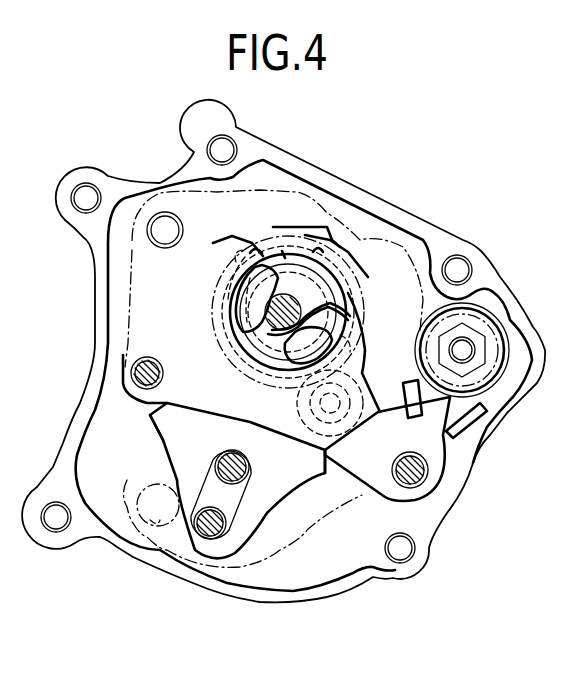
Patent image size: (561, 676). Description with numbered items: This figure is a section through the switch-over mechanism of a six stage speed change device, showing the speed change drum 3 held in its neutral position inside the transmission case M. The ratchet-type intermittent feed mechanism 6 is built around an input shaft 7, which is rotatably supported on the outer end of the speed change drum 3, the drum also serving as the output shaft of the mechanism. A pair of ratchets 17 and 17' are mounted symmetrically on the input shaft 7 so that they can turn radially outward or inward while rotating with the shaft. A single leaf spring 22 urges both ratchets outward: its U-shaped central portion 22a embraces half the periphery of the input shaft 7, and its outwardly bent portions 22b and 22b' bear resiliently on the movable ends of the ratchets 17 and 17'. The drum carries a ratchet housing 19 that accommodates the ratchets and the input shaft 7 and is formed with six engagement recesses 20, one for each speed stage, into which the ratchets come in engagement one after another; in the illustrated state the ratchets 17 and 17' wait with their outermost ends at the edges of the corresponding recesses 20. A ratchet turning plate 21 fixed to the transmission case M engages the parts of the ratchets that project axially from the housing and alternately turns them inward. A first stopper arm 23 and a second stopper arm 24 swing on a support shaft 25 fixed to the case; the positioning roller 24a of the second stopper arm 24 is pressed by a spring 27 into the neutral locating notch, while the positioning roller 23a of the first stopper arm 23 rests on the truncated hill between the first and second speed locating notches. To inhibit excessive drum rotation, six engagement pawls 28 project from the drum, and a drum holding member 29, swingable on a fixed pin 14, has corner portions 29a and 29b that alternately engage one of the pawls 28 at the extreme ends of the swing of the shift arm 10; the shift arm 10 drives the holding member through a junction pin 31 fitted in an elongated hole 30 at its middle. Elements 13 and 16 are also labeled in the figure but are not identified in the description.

The transmission case M is at (353, 193).
The speed change drum 3 is at (290, 247).
The intermittent feed mechanism 6 is at (365, 299).
The input shaft 7 is at (333, 293).
The shift arm 10 is at (300, 550).
The crank pin 13 is at (160, 520).
The fixed pin 14 is at (160, 520).
The slot 16 is at (197, 432).
The ratchet 17 is at (215, 297).
The ratchet 17' is at (343, 341).
The ratchet housing 19 is at (293, 250).
The engagement recesses 20 is at (253, 255).
The ratchet turning plate 21 is at (153, 340).
The leaf spring 22 is at (243, 340).
The U-shaped central portion 22a is at (258, 337).
The outwardly bent portion 22b is at (204, 263).
The outwardly bent portion 22b' is at (382, 322).
The first stopper arm 23 is at (410, 398).
The positioning roller 23a is at (405, 502).
The second stopper arm 24 is at (408, 420).
The positioning roller 24a is at (327, 440).
The support shaft 25 is at (466, 349).
The spring 27 is at (477, 415).
The engagement pawls 28 is at (225, 270).
The drum holding member 29 is at (186, 472).
The corner portion 29a is at (150, 415).
The corner portion 29b is at (357, 470).
The elongated hole 30 is at (180, 442).
The junction pin 31 is at (255, 472).